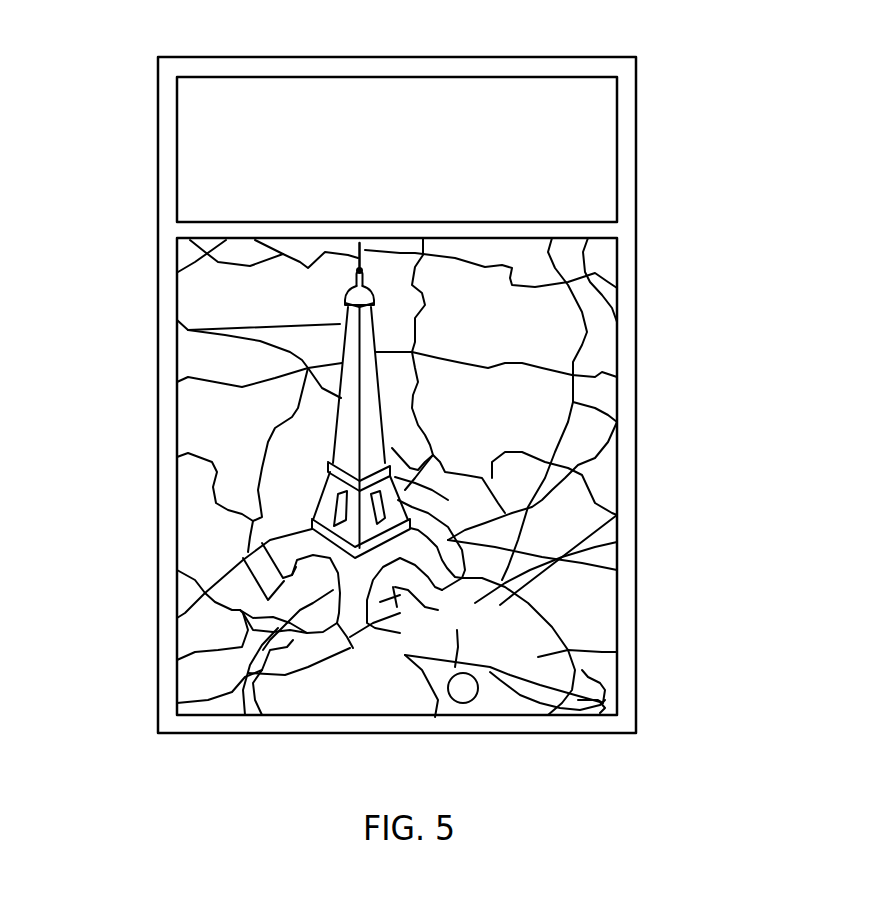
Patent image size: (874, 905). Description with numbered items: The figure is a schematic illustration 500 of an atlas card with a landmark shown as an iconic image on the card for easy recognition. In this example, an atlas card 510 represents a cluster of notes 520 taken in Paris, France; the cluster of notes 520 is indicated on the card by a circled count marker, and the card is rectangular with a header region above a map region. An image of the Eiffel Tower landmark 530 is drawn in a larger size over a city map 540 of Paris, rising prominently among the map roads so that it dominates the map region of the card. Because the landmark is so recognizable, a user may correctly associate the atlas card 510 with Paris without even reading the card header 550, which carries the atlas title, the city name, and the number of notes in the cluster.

The schematic illustration 500 is at (813, 110).
The atlas card 510 is at (170, 70).
The cluster of notes 520 is at (473, 700).
The Eiffel Tower landmark 530 is at (180, 322).
The city map 540 is at (200, 710).
The card header 550 is at (177, 157).